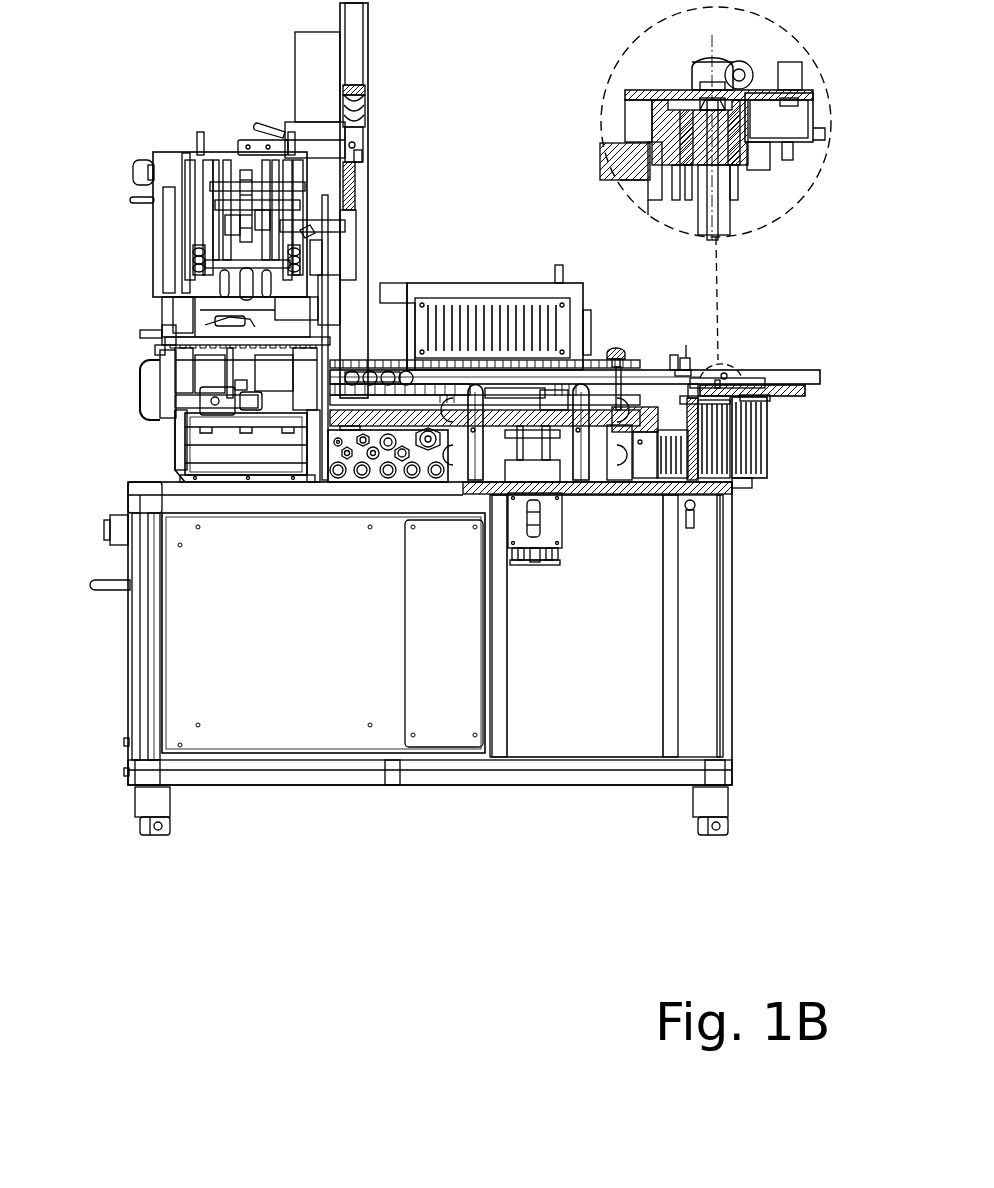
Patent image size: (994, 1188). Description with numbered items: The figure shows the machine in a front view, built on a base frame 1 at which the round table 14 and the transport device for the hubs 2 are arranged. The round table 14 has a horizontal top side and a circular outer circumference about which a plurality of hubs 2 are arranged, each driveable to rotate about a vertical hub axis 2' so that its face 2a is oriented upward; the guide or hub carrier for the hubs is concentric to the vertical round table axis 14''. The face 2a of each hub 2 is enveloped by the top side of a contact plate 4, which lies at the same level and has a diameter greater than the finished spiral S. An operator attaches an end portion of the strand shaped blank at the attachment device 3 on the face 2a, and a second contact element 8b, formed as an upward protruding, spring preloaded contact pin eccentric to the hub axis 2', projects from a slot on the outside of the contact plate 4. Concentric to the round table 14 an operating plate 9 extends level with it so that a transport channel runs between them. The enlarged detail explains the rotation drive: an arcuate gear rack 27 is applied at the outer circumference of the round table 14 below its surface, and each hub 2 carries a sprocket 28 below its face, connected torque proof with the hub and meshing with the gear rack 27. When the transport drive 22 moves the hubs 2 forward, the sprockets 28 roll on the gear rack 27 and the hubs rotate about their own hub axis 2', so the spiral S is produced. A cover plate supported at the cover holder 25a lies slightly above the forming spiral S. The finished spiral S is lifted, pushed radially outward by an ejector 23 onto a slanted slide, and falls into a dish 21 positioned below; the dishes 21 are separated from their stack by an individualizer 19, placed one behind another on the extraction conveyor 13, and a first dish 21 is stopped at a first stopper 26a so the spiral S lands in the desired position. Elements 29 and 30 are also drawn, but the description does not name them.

The base frame 1 is at (727, 594).
The individualizer 19 is at (122, 245).
The extraction conveyor 13 is at (130, 401).
The spiral S is at (357, 372).
The ejector 23 is at (436, 318).
The round table 14 is at (544, 389).
The adjusting knob 30 is at (622, 350).
The support block 29 is at (635, 420).
The cover holder 25a is at (650, 400).
The operating plate 9 is at (772, 389).
The first stopper 26a is at (253, 402).
The dish 21 is at (278, 405).
The sprocket 28 is at (500, 382).
The transport drive 22 is at (548, 520).
The gear rack 27 is at (652, 480).
The round table axis 14'' is at (552, 579).
The hub axis 2' is at (706, 66).
The attachment device 3 is at (702, 61).
The face 2a is at (742, 72).
The second contact element 8b is at (788, 73).
The contact plate 4 is at (650, 92).
The hub 2 is at (777, 131).